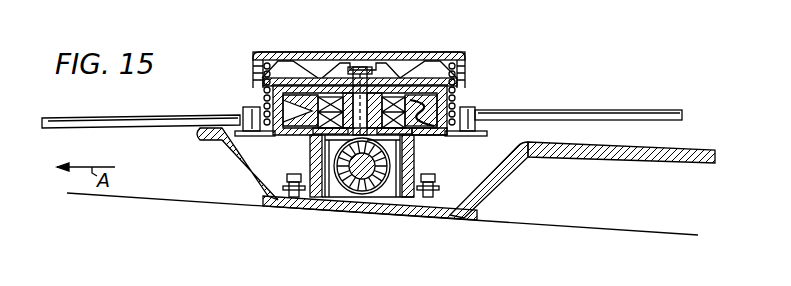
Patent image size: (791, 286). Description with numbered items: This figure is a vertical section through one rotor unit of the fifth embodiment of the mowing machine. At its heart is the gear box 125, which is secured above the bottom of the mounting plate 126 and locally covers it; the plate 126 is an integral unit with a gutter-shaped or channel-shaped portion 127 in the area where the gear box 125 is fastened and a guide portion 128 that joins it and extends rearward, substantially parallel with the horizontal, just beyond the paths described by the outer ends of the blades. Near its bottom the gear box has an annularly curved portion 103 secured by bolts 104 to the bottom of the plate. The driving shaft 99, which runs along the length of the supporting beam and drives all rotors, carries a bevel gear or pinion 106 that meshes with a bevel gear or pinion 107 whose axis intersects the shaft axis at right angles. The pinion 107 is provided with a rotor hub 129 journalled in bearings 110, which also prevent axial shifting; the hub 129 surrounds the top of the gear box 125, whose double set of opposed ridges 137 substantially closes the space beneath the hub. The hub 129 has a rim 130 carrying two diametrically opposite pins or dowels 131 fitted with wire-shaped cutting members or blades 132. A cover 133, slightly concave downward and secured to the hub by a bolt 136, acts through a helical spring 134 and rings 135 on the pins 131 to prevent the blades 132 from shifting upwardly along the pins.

The driving shaft 99 is at (333, 202).
The annularly curved portion 103 is at (478, 202).
The bolts 104 is at (292, 205).
The bevel gear or pinion 106 is at (379, 205).
The bevel gear or pinion 107 is at (412, 150).
The bearings 110 is at (405, 84).
The gear box 125 is at (312, 152).
The mounting plate 126 is at (311, 212).
The gutter-shaped or channel-shaped portion 127 is at (359, 212).
The guide portion 128 is at (688, 158).
The rotor hub 129 is at (328, 77).
The rim 130 is at (220, 150).
The pins or dowels 131 is at (243, 108).
The cutting members or blades 132 is at (120, 130).
The cover 133 is at (458, 53).
The helical spring 134 is at (466, 100).
The rings 135 is at (488, 112).
The bolt 136 is at (365, 66).
The ridges 137 is at (427, 130).